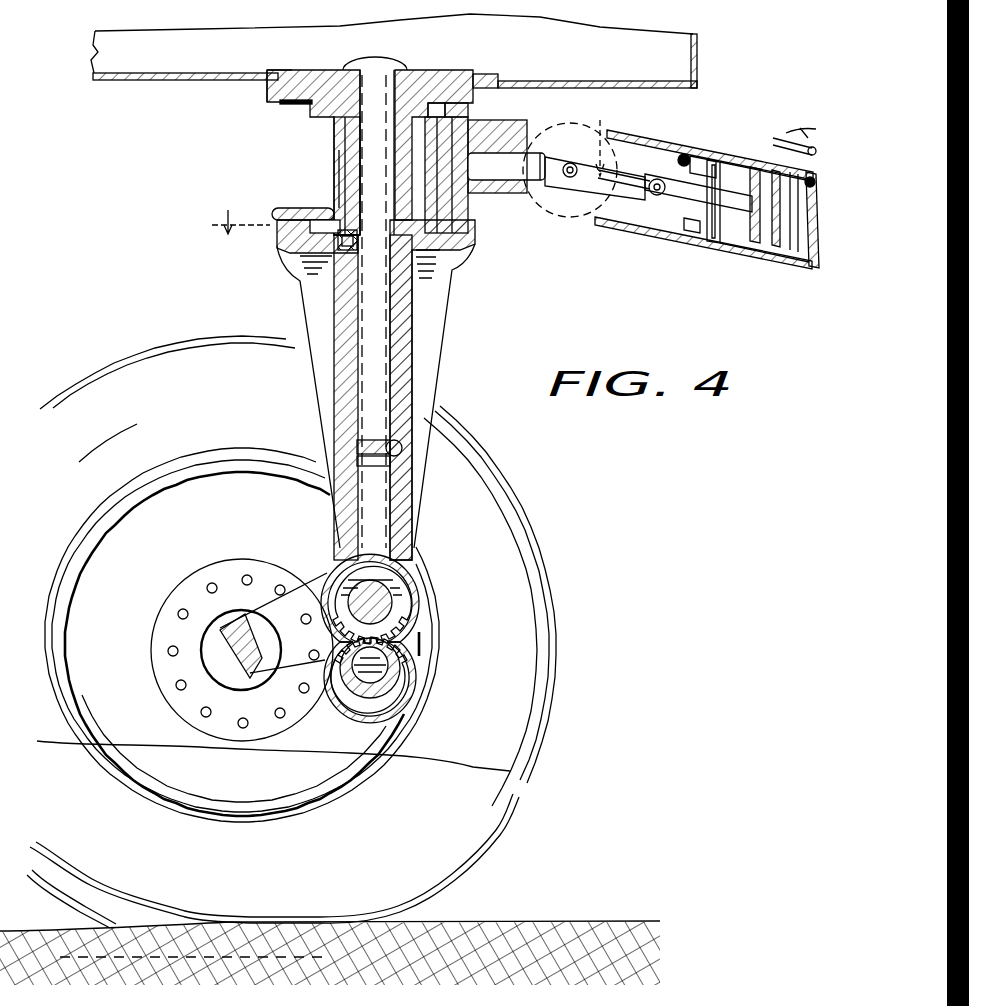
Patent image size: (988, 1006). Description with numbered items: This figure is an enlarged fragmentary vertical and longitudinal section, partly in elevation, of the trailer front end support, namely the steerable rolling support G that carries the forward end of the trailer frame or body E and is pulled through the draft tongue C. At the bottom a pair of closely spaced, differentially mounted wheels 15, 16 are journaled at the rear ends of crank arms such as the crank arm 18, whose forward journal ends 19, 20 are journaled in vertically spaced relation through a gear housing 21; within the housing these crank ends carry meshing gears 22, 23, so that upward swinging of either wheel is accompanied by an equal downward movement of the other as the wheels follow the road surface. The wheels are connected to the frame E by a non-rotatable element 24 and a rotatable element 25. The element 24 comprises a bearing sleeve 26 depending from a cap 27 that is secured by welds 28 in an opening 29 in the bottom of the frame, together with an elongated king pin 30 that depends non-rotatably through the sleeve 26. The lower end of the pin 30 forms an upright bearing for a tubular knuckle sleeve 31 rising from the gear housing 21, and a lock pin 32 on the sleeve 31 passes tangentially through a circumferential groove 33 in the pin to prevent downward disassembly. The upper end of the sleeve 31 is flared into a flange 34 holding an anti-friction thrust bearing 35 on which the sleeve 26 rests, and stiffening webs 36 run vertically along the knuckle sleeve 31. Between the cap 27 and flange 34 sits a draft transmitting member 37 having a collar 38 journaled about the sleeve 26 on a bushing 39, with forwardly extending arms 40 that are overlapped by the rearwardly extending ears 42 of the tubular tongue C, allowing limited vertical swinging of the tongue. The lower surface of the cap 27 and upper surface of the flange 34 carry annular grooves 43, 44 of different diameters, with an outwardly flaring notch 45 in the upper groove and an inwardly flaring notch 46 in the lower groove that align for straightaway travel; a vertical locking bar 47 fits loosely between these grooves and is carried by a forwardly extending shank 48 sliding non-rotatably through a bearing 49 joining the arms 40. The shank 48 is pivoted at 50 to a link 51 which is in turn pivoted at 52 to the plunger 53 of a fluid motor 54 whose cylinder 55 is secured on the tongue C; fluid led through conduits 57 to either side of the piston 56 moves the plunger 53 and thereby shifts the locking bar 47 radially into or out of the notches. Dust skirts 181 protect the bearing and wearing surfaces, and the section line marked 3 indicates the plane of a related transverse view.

The wheel 15 is at (475, 826).
The wheel 16 is at (530, 750).
The crank arm 18 is at (308, 583).
The forward journal end 19 is at (388, 678).
The forward journal end 20 is at (405, 580).
The gear housing 21 is at (418, 672).
The gear 22 is at (408, 658).
The gear 23 is at (408, 604).
The non-rotatable element 24 is at (262, 100).
The rotatable element 25 is at (452, 380).
The bearing sleeve 26 is at (352, 144).
The cap 27 is at (300, 70).
The welds 28 is at (270, 72).
The opening 29 is at (481, 75).
The king pin 30 is at (385, 322).
The knuckle sleeve 31 is at (412, 350).
The lock pin 32 is at (402, 448).
The circumferential groove 33 is at (357, 448).
The flange 34 is at (300, 268).
The anti-friction thrust bearing 35 is at (342, 250).
The stiffening webs 36 is at (365, 368).
The draft transmitting member 37 is at (268, 210).
The collar 38 is at (341, 165).
The bushing 39 is at (339, 190).
The arms 40 is at (530, 125).
The ears 42 is at (588, 218).
The upper annular groove 43 is at (283, 104).
The lower annular groove 44 is at (288, 243).
The notch 45 is at (437, 104).
The notch 46 is at (422, 274).
The locking bar 47 is at (452, 150).
The shank 48 is at (500, 182).
The bearing 49 is at (490, 135).
The pivot 50 is at (570, 163).
The link 51 is at (622, 142).
The pivot 52 is at (648, 192).
The plunger 53 is at (668, 192).
The fluid motor 54 is at (690, 231).
The cylinder 55 is at (712, 244).
The piston 56 is at (742, 246).
The conduits 57 is at (780, 145).
The dust skirts 181 is at (507, 83).
The section line 3- 3 is at (410, 181).
The trailer frame E is at (90, 59).
The steerable rolling support G is at (568, 693).
The draft tongue C is at (785, 262).